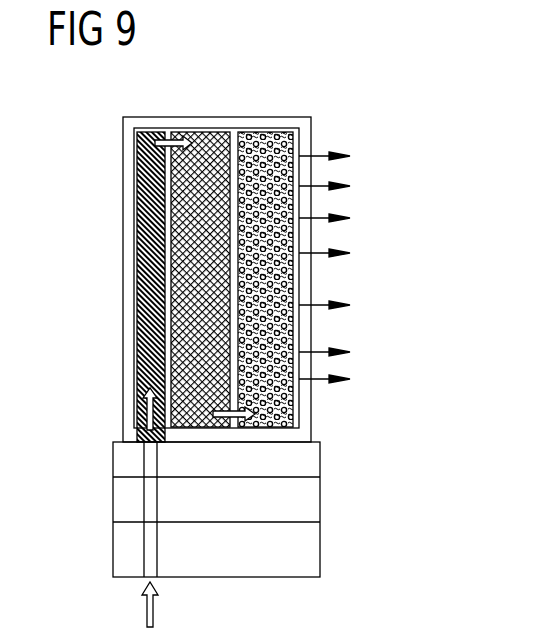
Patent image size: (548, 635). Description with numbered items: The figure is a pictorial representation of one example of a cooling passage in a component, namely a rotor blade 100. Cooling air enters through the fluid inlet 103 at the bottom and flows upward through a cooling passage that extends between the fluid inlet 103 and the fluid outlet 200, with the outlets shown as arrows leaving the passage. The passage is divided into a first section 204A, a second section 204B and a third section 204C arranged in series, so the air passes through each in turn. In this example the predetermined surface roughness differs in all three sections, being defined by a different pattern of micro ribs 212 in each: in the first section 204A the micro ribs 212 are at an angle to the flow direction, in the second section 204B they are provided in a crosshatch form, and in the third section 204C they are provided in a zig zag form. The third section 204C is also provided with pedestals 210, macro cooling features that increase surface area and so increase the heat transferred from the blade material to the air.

The rotor blade 100 is at (320, 112).
The fluid outlet 200 is at (122, 180).
The pedestals 210 is at (294, 404).
The micro ribs 212 is at (147, 226).
The first section 204A is at (147, 272).
The second section 204B is at (206, 132).
The third section 204C is at (283, 132).
The fluid inlet 103 is at (150, 543).